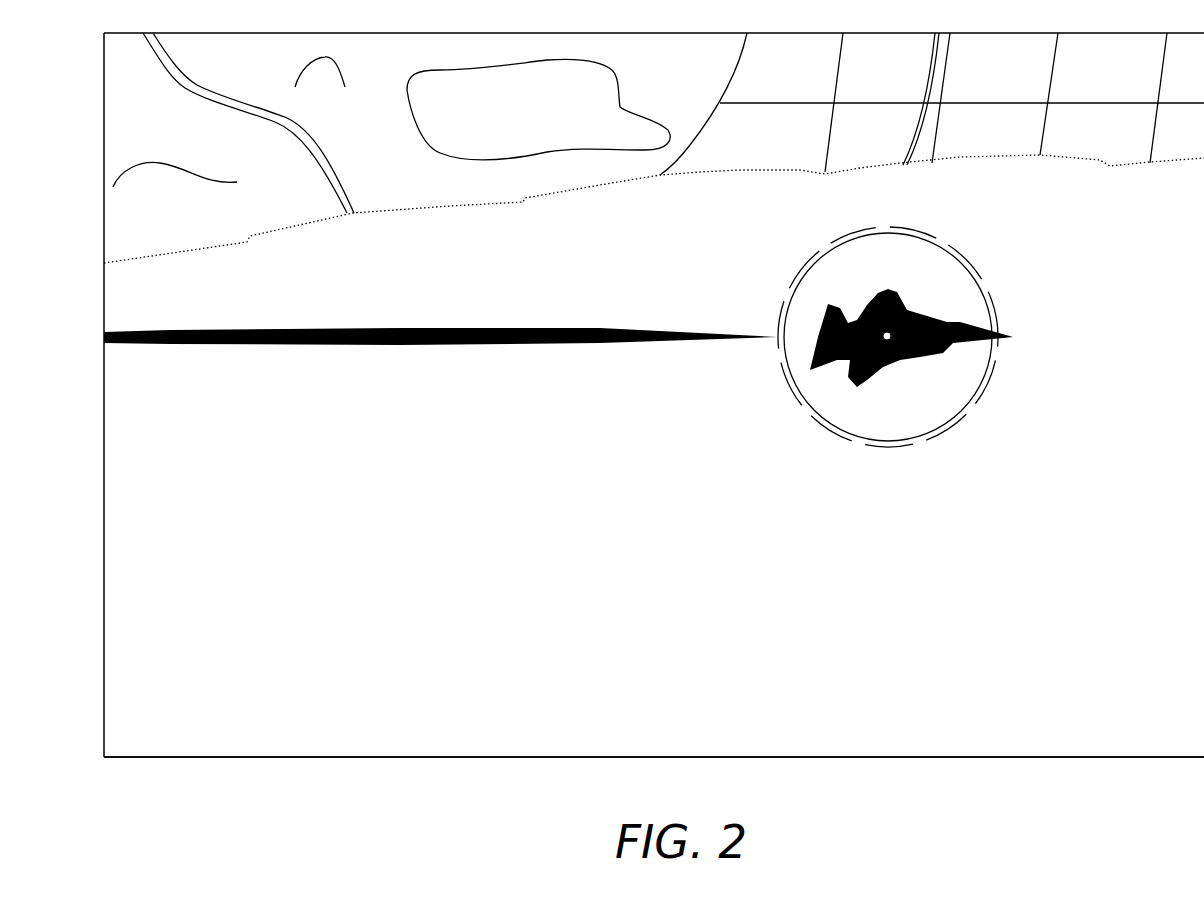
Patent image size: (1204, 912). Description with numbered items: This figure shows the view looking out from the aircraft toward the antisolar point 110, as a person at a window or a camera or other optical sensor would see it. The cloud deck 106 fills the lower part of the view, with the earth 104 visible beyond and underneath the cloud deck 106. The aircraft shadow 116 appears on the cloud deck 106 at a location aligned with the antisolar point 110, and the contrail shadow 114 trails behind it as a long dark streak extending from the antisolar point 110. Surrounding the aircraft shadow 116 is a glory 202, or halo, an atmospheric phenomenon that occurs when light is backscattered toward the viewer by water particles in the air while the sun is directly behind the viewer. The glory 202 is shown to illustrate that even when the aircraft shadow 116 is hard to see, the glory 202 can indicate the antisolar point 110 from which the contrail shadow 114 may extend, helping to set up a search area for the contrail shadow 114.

The earth 104 is at (400, 160).
The cloud deck 106 is at (582, 568).
The antisolar point 110 is at (891, 333).
The contrail shadow 114 is at (434, 345).
The aircraft shadow 116 is at (857, 388).
The glory 202 is at (947, 428).